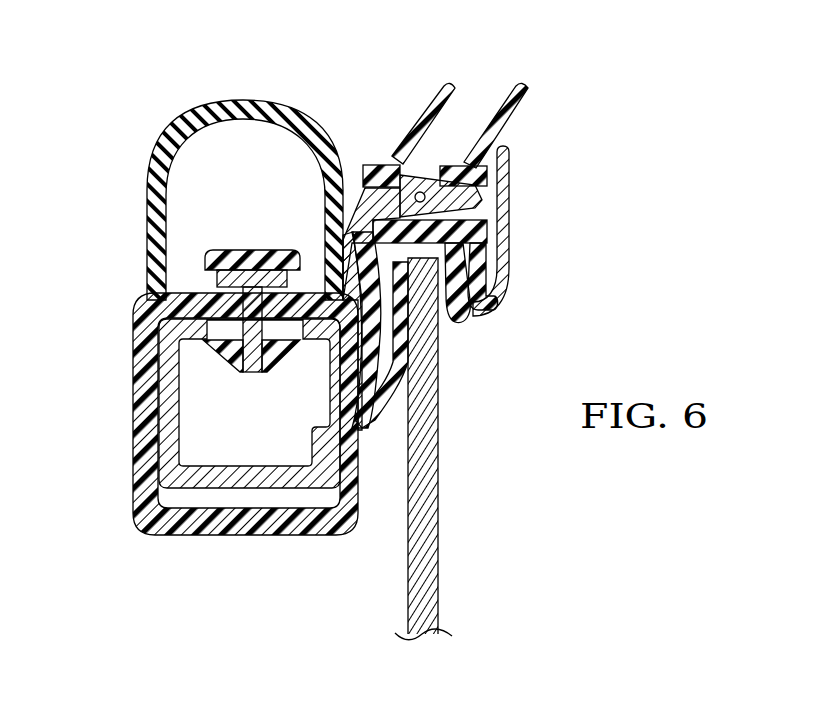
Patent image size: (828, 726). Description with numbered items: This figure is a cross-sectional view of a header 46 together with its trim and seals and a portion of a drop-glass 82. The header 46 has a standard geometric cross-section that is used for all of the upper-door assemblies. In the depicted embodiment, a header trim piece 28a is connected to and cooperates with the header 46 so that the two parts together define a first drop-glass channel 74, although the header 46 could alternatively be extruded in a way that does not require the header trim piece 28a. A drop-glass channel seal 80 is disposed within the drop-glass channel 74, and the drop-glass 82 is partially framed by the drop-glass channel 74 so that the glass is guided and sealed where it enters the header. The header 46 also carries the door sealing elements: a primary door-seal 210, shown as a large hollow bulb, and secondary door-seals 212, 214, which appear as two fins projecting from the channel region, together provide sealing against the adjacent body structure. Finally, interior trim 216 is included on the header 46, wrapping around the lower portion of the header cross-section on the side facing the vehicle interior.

The primary door-seal 210 is at (243, 100).
The secondary door-seal 212 is at (455, 88).
The secondary door-seal 214 is at (527, 84).
The header trim piece 28a is at (507, 228).
The drop-glass channel seal 80 is at (486, 270).
The first drop-glass channel 74 is at (449, 330).
The drop-glass 82 is at (438, 462).
The header 46 is at (172, 412).
The interior trim 216 is at (147, 505).